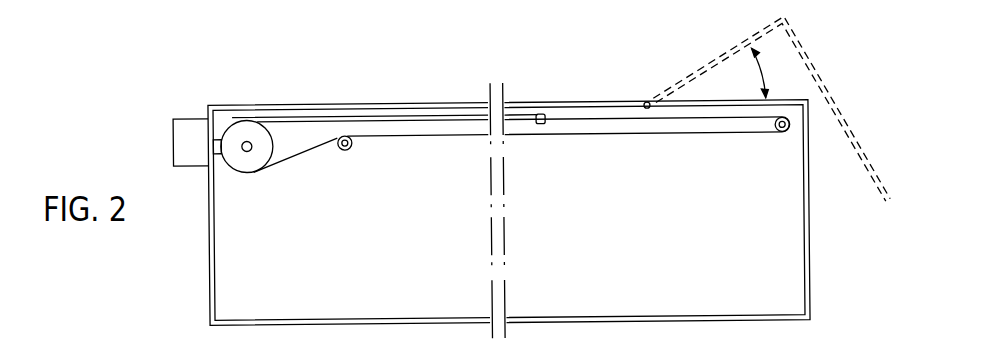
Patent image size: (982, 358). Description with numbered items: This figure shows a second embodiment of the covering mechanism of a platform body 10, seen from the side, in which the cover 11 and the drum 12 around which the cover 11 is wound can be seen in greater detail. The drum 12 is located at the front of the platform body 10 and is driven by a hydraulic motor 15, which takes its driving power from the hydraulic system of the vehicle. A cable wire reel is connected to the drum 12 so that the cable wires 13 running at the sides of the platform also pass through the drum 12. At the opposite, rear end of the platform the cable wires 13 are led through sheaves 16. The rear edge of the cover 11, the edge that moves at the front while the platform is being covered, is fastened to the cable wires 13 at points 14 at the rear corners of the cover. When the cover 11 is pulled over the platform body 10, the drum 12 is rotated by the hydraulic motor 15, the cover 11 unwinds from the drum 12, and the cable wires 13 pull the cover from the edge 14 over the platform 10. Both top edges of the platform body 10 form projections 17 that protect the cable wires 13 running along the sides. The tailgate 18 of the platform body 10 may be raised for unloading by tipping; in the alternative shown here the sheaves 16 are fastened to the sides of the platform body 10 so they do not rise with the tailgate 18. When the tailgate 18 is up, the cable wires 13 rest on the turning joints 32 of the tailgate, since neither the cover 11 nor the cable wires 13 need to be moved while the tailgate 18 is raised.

The platform body 10 is at (839, 276).
The cover 11 is at (421, 114).
The drum 12 is at (242, 129).
The cable wires 13 is at (641, 135).
The fastening points 14 is at (544, 103).
The hydraulic motor 15 is at (183, 125).
The sheaves 16 is at (792, 127).
The projections 17 is at (359, 102).
The tailgate 18 is at (803, 225).
The turning joints 32 is at (648, 103).